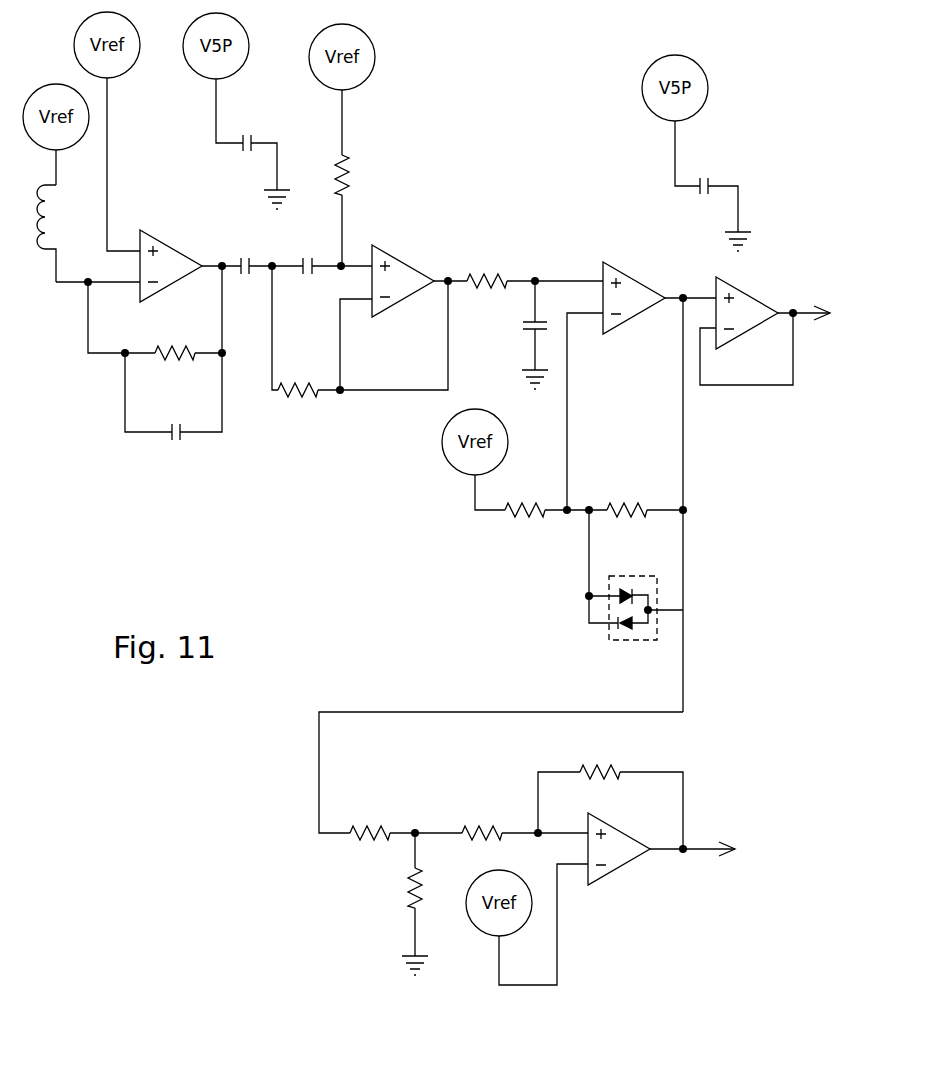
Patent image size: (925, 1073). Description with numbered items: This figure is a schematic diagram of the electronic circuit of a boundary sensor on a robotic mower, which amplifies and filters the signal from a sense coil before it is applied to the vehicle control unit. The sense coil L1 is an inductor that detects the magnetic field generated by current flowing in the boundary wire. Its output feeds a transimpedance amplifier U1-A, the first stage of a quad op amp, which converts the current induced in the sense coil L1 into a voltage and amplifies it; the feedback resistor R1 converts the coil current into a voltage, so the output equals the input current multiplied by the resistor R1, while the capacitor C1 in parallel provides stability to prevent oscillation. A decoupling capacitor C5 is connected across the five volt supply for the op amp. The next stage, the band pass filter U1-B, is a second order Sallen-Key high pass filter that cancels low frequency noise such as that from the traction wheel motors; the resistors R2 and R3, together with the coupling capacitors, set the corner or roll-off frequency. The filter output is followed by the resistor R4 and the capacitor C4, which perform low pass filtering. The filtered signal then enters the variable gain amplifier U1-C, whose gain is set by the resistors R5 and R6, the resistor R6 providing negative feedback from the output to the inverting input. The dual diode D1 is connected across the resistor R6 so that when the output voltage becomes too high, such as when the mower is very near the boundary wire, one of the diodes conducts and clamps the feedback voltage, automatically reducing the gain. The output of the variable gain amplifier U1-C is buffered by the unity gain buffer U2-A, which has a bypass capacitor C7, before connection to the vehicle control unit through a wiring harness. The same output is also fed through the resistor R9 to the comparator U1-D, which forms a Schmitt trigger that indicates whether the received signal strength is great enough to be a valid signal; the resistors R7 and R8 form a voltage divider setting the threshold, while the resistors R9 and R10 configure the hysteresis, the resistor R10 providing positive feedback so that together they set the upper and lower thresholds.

The sense coil L1 is at (50, 206).
The transimpedance amplifier U1-A is at (178, 248).
The feedback resistor R1 is at (160, 348).
The capacitor C1 is at (182, 438).
The decoupling capacitor C5 is at (252, 138).
The resistor R3 is at (350, 172).
The band pass filter U1-B is at (402, 260).
The resistor R2 is at (298, 398).
The resistor R4 is at (480, 275).
The capacitor C4 is at (530, 329).
The bypass capacitor C7 is at (710, 180).
The variable gain amplifier U1-C is at (640, 283).
The unity gain buffer U2-A is at (766, 304).
The resistor R5 is at (526, 518).
The resistor R6 is at (619, 504).
The dual diode D1 is at (625, 640).
The resistor R7 is at (360, 826).
The resistor R9 is at (472, 826).
The resistor R8 is at (407, 908).
The resistor R10 is at (586, 768).
The comparator U1-D is at (626, 863).